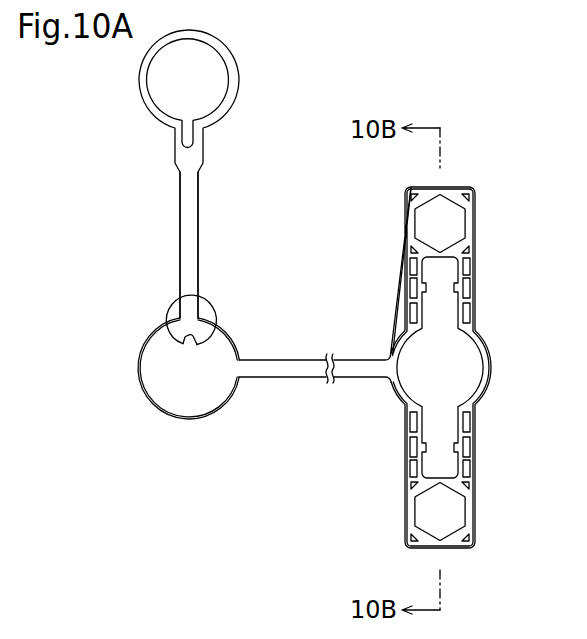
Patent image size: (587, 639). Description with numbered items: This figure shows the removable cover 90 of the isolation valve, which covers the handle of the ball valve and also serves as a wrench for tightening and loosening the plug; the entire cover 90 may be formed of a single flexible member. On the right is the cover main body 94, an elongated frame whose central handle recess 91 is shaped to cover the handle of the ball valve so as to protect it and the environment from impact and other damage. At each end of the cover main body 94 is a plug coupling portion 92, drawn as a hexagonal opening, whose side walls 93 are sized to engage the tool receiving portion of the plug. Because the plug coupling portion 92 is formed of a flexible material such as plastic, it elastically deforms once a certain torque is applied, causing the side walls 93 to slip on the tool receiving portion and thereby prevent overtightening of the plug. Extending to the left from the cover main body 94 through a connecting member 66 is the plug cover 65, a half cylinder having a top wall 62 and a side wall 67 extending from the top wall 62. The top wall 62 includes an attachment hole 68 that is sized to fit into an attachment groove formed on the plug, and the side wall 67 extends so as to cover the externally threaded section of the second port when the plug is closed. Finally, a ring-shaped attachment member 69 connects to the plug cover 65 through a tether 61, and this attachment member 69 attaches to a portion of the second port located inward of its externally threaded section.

The tether 61 is at (198, 215).
The top wall 62 is at (187, 407).
The plug cover 65 is at (137, 366).
The connecting member 66 is at (283, 378).
The side wall 67 is at (222, 408).
The attachment hole 68 is at (196, 357).
The attachment member 69 is at (239, 80).
The cover 90 is at (492, 169).
The handle recess 91 is at (437, 315).
The plug coupling portion 92 is at (476, 203).
The side walls 93 is at (460, 222).
The cover main body 94 is at (476, 423).